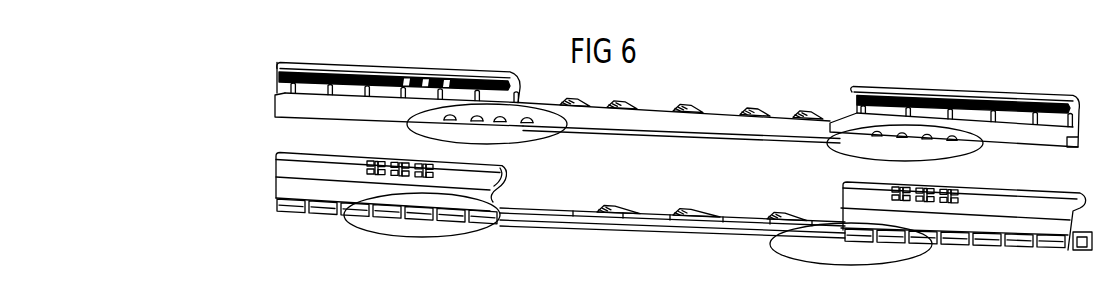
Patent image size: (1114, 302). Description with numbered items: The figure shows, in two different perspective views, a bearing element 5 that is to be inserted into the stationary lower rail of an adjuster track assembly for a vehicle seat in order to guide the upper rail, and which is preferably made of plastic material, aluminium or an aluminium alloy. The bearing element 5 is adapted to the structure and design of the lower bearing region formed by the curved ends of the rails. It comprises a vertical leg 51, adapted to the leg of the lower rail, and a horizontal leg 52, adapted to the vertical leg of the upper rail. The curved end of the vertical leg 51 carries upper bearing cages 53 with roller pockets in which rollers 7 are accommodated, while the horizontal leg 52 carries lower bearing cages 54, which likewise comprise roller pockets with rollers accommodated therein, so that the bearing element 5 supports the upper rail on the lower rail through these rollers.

The bearing element 5 is at (715, 106).
The rollers 7 is at (383, 163).
The vertical leg 51 is at (460, 66).
The horizontal leg 52 is at (703, 127).
The upper bearing cages 53 is at (452, 66).
The lower bearing cages 54 is at (540, 139).